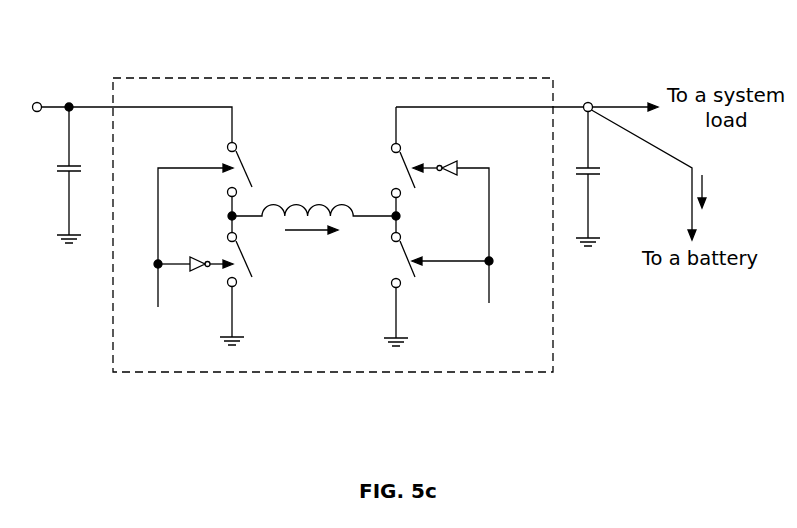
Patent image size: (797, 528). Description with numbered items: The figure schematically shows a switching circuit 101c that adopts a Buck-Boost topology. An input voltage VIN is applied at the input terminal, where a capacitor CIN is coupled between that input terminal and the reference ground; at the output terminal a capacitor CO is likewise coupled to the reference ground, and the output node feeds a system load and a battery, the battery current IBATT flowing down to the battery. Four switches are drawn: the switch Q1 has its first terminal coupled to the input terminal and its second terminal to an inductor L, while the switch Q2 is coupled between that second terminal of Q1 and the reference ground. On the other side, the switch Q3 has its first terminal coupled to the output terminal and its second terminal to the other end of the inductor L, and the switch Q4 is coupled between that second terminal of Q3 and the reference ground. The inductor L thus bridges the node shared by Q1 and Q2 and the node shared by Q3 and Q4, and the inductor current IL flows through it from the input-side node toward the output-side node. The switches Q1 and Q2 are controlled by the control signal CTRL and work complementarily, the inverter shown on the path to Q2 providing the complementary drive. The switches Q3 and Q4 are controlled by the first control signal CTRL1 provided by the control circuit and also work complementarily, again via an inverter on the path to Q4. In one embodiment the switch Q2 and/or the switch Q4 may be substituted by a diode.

The switching circuit 101c is at (506, 78).
The switch Q1 is at (254, 188).
The switch Q2 is at (252, 289).
The switch Q3 is at (388, 290).
The switch Q4 is at (386, 188).
The inductor L is at (314, 194).
The inductor current IL is at (311, 239).
The control signal CTRL is at (180, 251).
The first control signal CTRL1 is at (474, 248).
The input voltage VIN is at (46, 93).
The capacitor CIN is at (53, 175).
The capacitor CO is at (607, 175).
The battery current IBATT is at (669, 175).